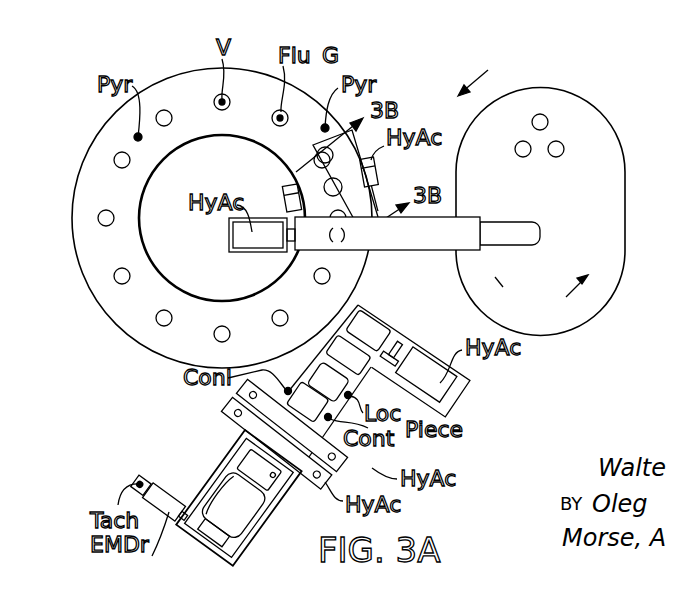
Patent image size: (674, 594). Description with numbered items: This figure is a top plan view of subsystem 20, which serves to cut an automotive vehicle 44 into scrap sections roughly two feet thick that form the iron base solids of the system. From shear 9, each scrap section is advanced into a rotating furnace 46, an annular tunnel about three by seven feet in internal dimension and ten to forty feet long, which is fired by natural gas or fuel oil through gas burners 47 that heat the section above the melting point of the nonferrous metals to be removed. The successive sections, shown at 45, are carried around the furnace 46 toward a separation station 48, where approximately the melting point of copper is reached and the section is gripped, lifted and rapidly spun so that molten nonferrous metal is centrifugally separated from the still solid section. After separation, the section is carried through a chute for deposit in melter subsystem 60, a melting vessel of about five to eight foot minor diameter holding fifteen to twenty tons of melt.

The rotating furnace 46 is at (76, 179).
The gas burners 47 is at (99, 222).
The separation station 48 is at (299, 181).
The subsystem 20 is at (489, 70).
The melter subsystem 60 is at (563, 211).
The scrap section 45 is at (377, 392).
The shear 9 is at (274, 434).
The automotive vehicle 44 is at (222, 492).